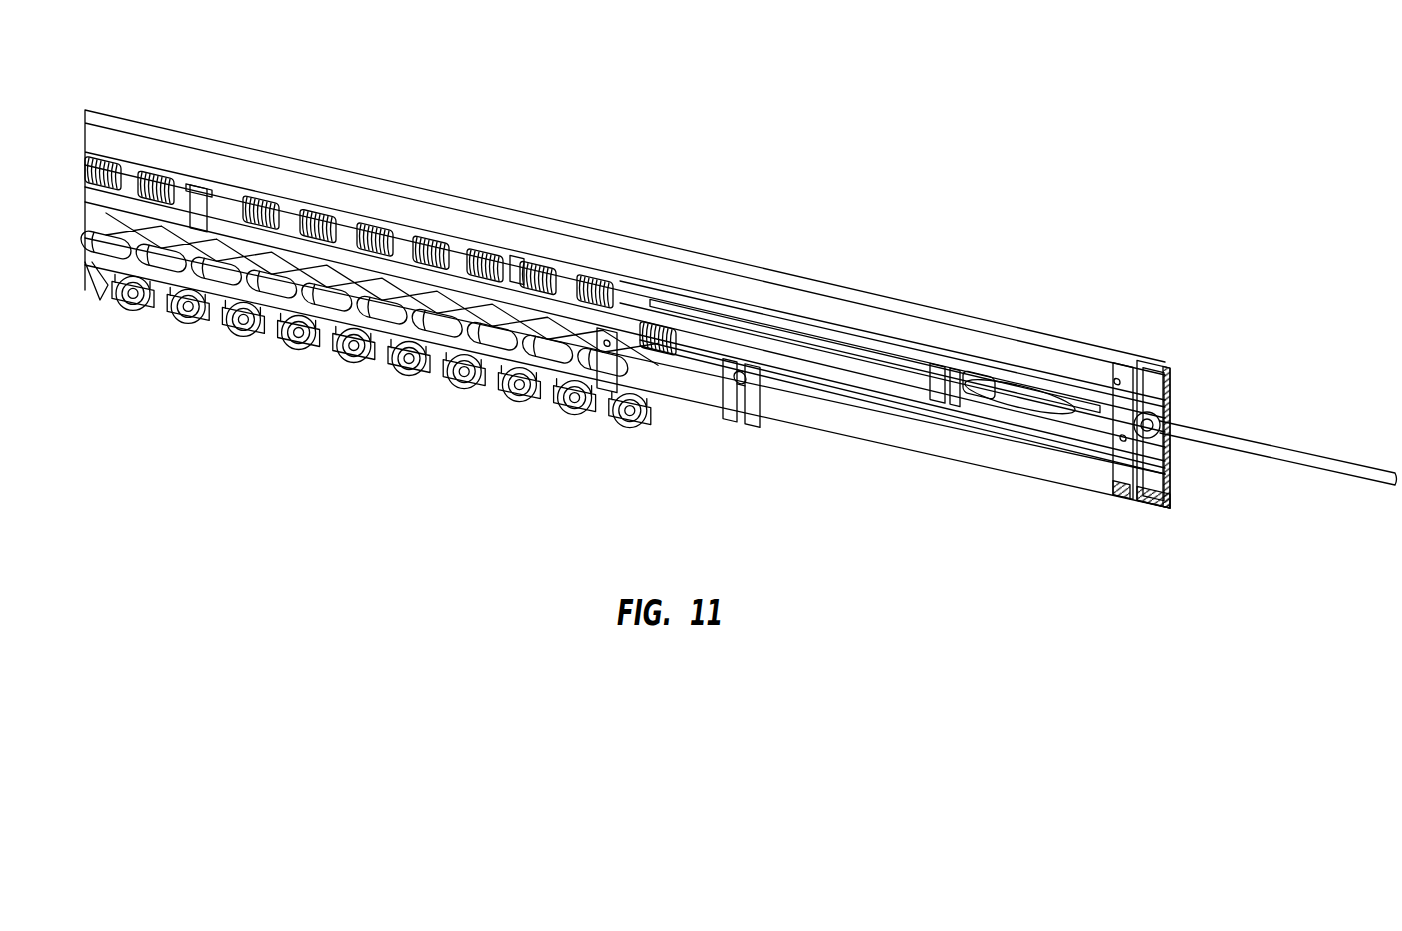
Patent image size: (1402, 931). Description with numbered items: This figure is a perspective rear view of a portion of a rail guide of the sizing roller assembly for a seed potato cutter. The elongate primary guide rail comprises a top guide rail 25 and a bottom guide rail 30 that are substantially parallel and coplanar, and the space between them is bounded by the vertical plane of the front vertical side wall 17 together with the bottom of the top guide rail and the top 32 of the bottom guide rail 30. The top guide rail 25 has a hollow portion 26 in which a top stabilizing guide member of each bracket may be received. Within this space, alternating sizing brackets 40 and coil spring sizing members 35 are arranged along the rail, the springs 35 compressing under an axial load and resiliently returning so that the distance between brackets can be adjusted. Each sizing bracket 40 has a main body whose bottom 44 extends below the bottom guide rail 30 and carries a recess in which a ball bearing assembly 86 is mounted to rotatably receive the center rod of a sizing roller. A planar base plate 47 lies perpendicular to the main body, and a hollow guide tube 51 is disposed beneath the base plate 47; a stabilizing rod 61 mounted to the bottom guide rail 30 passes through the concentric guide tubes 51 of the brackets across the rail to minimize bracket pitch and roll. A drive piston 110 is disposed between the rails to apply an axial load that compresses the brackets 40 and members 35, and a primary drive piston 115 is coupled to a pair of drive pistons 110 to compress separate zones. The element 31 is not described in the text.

The front vertical side wall 17 is at (700, 280).
The top guide rail 25 is at (1070, 368).
The hollow portion 26 is at (1170, 380).
The bottom guide rail 30 is at (1100, 482).
The end plate foot 31 is at (1150, 492).
The top of the bottom guide rail 32 is at (1060, 437).
The spring sizing member 35 is at (330, 215).
The sizing bracket 40 is at (240, 205).
The bottom of the main body 44 is at (160, 280).
The planar base plate 47 is at (130, 190).
The hollow guide tube 51 is at (108, 242).
The stabilizing rod 61 is at (290, 285).
The ball bearing assembly 86 is at (470, 392).
The drive piston 110 is at (828, 340).
The primary drive piston 115 is at (972, 375).